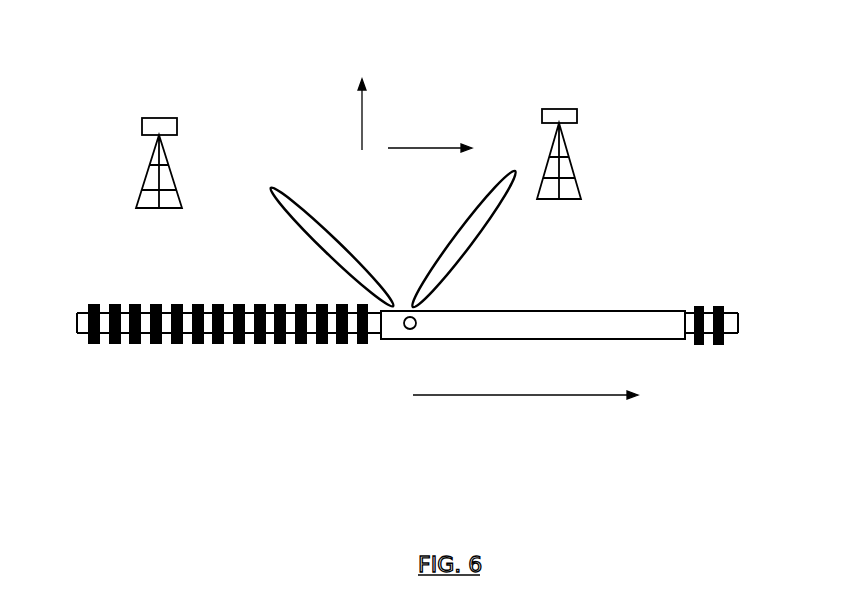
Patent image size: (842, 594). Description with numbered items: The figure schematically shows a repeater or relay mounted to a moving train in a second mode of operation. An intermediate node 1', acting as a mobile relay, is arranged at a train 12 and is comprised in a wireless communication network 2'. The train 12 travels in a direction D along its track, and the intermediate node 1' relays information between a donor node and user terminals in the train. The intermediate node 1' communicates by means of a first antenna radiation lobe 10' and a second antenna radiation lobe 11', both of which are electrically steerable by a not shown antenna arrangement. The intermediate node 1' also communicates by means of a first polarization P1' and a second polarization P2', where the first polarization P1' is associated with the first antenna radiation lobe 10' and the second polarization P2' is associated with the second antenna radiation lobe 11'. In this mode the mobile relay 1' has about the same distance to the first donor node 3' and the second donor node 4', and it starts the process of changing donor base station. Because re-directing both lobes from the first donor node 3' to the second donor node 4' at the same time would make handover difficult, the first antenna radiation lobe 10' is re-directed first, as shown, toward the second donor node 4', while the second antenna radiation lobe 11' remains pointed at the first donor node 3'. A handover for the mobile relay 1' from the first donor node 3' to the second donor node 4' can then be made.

The intermediate node 1' is at (377, 354).
The wireless communication network 2' is at (191, 62).
The first donor node 3' is at (131, 161).
The second donor node 4' is at (617, 145).
The first antenna radiation lobe 10' is at (538, 239).
The second antenna radiation lobe 11' is at (301, 247).
The train 12 is at (510, 325).
The first polarization P1' is at (376, 114).
The second polarization P2' is at (430, 138).
The direction D is at (525, 383).